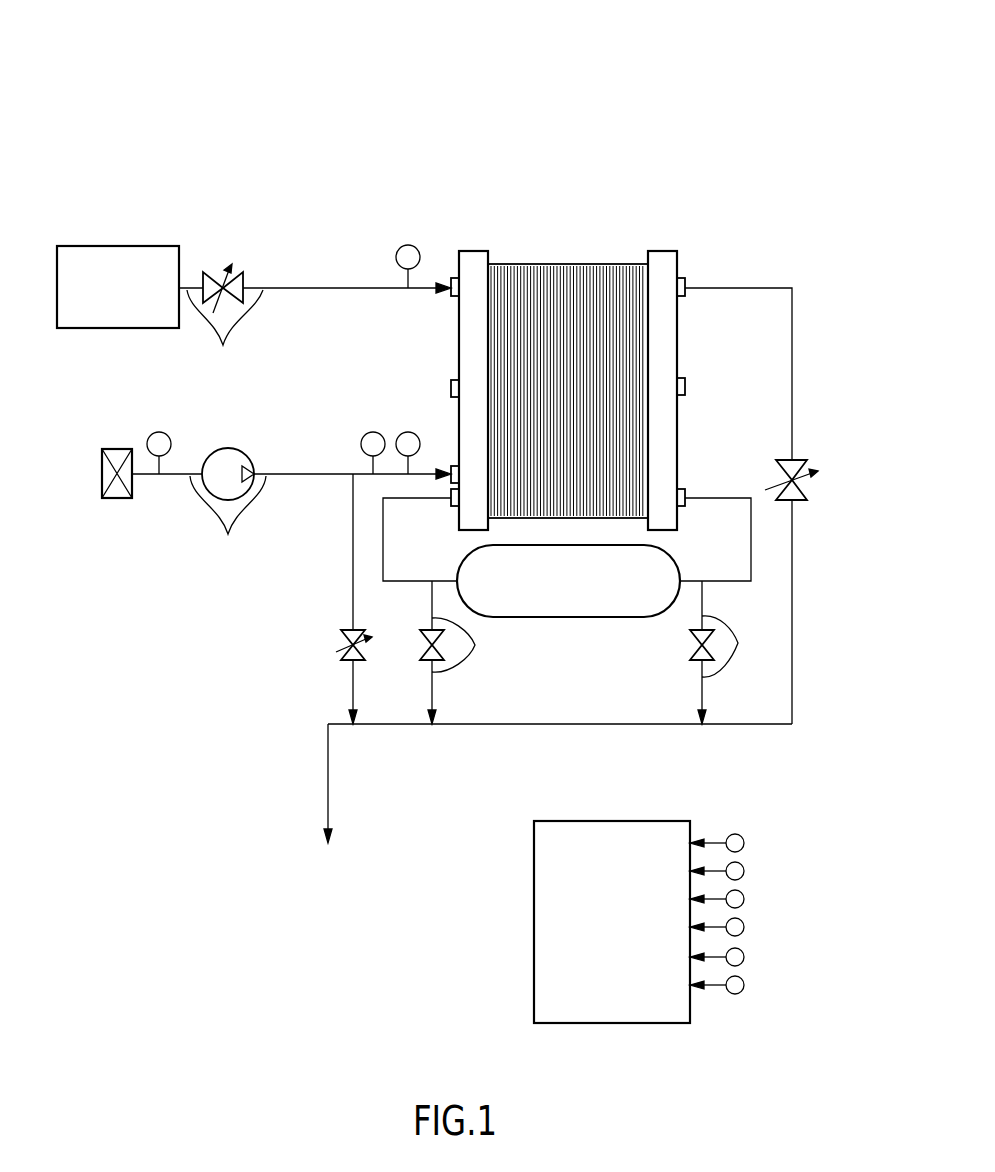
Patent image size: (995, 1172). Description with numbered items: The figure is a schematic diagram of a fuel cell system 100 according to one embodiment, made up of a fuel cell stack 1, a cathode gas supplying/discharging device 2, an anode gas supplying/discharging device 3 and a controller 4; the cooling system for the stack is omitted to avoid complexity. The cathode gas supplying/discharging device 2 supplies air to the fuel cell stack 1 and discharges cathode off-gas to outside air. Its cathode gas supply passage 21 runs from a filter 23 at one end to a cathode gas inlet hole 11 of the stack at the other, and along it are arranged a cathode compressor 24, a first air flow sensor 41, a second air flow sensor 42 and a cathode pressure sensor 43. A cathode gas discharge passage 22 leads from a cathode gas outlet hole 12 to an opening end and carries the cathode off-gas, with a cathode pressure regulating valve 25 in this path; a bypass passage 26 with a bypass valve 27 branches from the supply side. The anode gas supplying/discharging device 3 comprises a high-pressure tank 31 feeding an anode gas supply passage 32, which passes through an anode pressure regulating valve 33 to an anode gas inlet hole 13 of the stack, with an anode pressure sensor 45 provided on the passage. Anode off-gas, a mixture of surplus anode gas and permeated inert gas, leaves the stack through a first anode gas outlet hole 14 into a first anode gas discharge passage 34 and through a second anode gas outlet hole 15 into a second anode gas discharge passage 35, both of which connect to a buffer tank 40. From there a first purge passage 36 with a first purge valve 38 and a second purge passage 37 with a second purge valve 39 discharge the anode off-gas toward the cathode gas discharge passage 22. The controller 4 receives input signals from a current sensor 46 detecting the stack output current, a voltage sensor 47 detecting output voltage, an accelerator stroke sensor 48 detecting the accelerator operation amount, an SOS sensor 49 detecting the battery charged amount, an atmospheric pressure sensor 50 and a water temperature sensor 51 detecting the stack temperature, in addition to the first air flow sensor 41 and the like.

The fuel cell system 100 is at (163, 84).
The fuel cell stack 1 is at (594, 264).
The cathode gas supplying/discharging device 2 is at (123, 410).
The anode gas supplying/discharging device 3 is at (199, 242).
The controller 4 is at (640, 821).
The cathode gas inlet hole 11 is at (455, 466).
The cathode gas outlet hole 12 is at (684, 278).
The anode gas inlet hole 13 is at (455, 277).
The first anode gas outlet hole 14 is at (455, 507).
The second anode gas outlet hole 15 is at (683, 488).
The cathode gas supply passage 21 is at (291, 516).
The cathode gas discharge passage 22 is at (794, 375).
The filter 23 is at (115, 500).
The cathode compressor 24 is at (228, 448).
The cathode pressure regulating valve 25 is at (805, 492).
The bypass passage 26 is at (351, 583).
The bypass valve 27 is at (340, 640).
The high-pressure tank 31 is at (110, 246).
The anode gas supply passage 32 is at (315, 328).
The anode pressure regulating valve 33 is at (238, 266).
The first anode gas discharge passage 34 is at (400, 502).
The second anode gas discharge passage 35 is at (749, 497).
The first purge passage 36 is at (475, 645).
The second purge passage 37 is at (738, 643).
The first purge valve 38 is at (420, 630).
The second purge valve 39 is at (690, 637).
The buffer tank 40 is at (575, 620).
The first air flow sensor 41 is at (159, 432).
The second air flow sensor 42 is at (373, 432).
The cathode pressure sensor 43 is at (408, 432).
The anode pressure sensor 45 is at (408, 245).
The current sensor 46 is at (744, 843).
The voltage sensor 47 is at (744, 871).
The accelerator stroke sensor 48 is at (744, 899).
The SOS sensor 49 is at (744, 927).
The atmospheric pressure sensor 50 is at (744, 957).
The water temperature sensor 51 is at (744, 985).